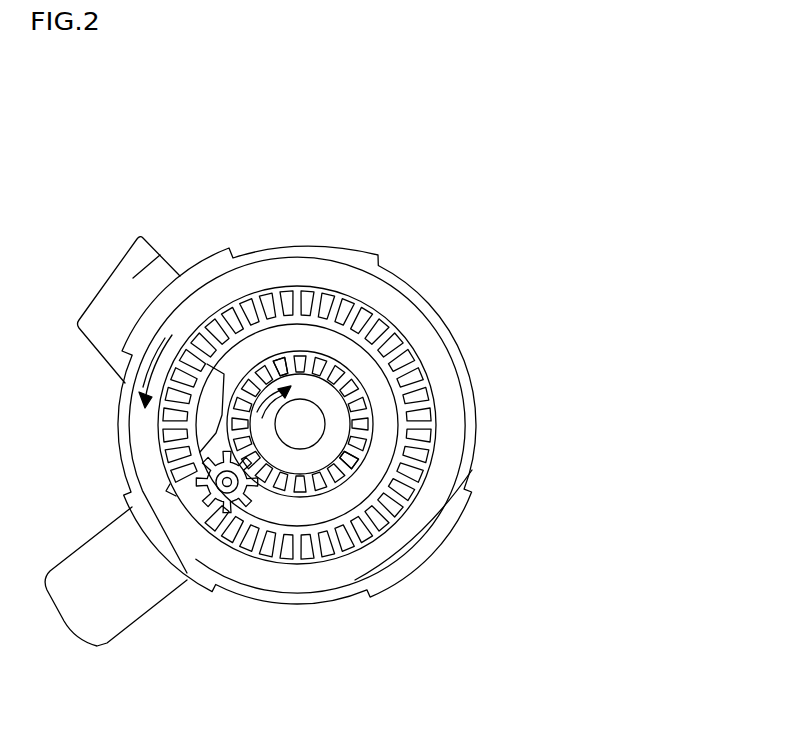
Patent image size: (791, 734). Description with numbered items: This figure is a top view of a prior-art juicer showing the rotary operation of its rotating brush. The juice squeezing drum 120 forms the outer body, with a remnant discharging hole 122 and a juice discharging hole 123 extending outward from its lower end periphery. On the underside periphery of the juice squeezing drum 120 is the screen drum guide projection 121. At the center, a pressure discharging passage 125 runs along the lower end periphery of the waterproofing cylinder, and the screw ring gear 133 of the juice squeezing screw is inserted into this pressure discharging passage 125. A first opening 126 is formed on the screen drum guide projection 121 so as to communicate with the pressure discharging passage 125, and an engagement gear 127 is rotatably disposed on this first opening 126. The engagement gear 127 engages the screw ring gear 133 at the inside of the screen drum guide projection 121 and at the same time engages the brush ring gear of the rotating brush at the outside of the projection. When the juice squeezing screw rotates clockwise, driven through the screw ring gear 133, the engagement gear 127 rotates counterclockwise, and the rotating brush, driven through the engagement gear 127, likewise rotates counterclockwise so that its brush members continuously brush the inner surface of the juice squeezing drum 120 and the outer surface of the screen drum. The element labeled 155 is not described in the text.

The juice squeezing drum 120 is at (303, 225).
The screen drum guide projection 121 is at (403, 381).
The remnant discharging hole 122 is at (160, 255).
The juice discharging hole 123 is at (91, 603).
The pressure discharging passage 125 is at (327, 357).
The first opening 126 is at (268, 492).
The engagement gear 127 is at (246, 507).
The screw ring gear 133 is at (446, 458).
The housing ring 155 is at (367, 412).